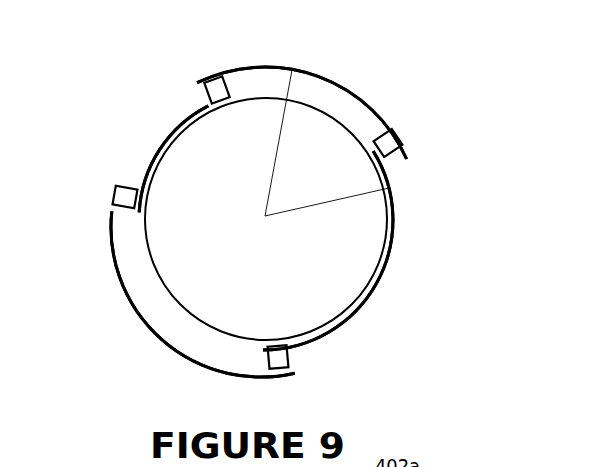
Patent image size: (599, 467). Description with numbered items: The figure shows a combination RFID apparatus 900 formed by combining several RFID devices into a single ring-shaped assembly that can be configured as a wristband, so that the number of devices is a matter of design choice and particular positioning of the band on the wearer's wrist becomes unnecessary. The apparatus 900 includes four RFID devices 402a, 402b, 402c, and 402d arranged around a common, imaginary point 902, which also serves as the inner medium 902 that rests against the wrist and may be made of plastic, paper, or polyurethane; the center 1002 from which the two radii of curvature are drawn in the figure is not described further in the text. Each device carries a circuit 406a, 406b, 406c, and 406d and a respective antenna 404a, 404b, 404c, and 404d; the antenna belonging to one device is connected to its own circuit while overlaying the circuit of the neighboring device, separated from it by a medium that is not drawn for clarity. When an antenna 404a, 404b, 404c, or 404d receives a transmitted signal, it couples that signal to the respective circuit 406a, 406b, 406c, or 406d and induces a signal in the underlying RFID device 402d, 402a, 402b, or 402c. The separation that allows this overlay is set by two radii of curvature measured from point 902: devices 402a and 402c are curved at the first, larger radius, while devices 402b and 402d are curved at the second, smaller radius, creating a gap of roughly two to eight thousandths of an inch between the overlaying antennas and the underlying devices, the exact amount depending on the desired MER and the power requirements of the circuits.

The combination RFID apparatus 900 is at (485, 131).
The RFID device 402a is at (334, 60).
The RFID device 402b is at (380, 322).
The RFID device 402c is at (140, 355).
The RFID device 402d is at (164, 100).
The antenna 404a is at (363, 103).
The antenna 404b is at (387, 262).
The antenna 404c is at (121, 277).
The antenna 404d is at (164, 147).
The circuit 406a is at (392, 132).
The circuit 406b is at (290, 352).
The circuit 406c is at (118, 211).
The circuit 406d is at (205, 83).
The common imaginary point 902 is at (330, 320).
The center point 1002 is at (265, 215).